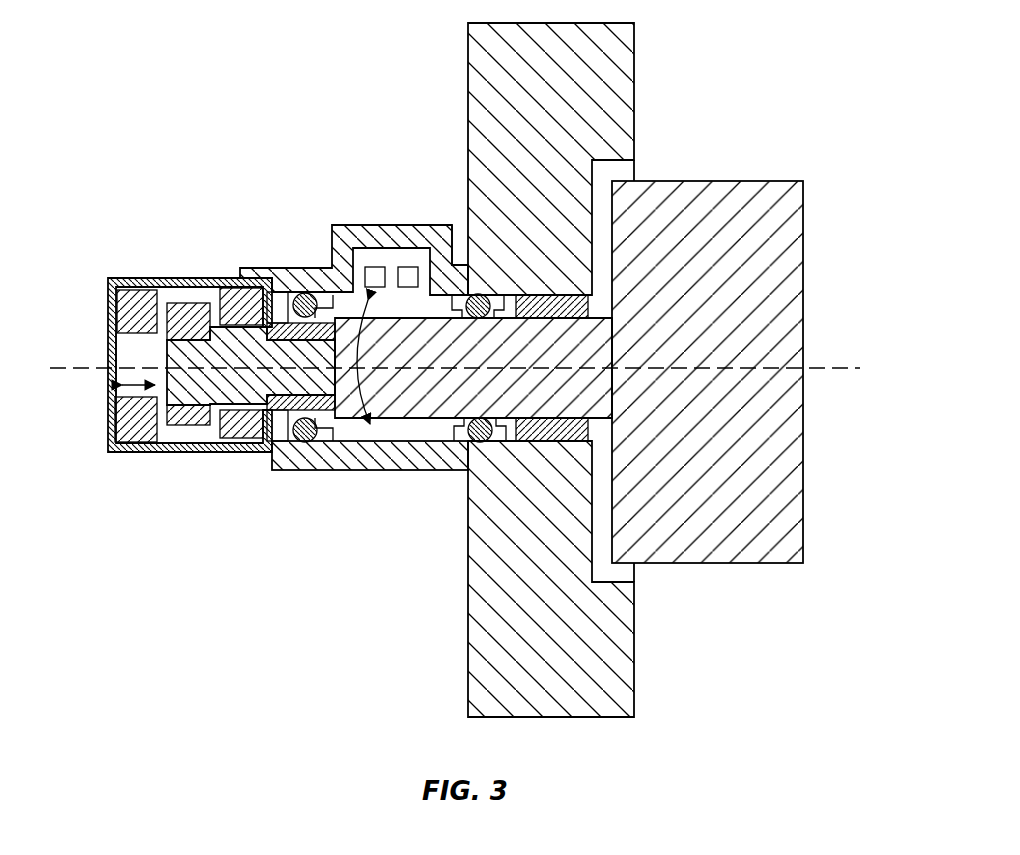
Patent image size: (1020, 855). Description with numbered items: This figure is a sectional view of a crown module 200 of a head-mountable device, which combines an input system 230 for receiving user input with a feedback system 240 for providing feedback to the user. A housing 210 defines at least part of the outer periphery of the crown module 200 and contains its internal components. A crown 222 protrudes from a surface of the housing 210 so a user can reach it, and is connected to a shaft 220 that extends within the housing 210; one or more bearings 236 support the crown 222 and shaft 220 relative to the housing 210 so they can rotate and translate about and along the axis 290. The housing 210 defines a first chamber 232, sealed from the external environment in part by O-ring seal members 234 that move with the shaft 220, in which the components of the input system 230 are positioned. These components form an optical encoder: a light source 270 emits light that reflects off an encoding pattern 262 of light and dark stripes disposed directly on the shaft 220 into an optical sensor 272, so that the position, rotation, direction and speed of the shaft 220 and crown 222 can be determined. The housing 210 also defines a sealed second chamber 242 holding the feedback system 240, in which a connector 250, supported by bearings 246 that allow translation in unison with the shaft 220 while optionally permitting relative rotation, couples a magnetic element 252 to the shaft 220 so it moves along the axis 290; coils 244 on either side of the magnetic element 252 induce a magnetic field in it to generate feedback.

The crown module 200 is at (122, 10).
The housing 210 is at (636, 100).
The shaft 220 is at (424, 402).
The crown 222 is at (805, 290).
The input system 230 is at (375, 540).
The first chamber 232 is at (361, 442).
The O-ring seal 234 is at (303, 444).
The bearings 236 is at (556, 294).
The feedback system 240 is at (183, 488).
The second chamber 242 is at (172, 300).
The coils 244 is at (116, 298).
The bearings 246 is at (279, 300).
The connector 250 is at (165, 397).
The magnetic element 252 is at (110, 362).
The encoding pattern 262 is at (455, 302).
The light source 270 is at (370, 265).
The optical sensor 272 is at (409, 265).
The axis 290 is at (851, 372).